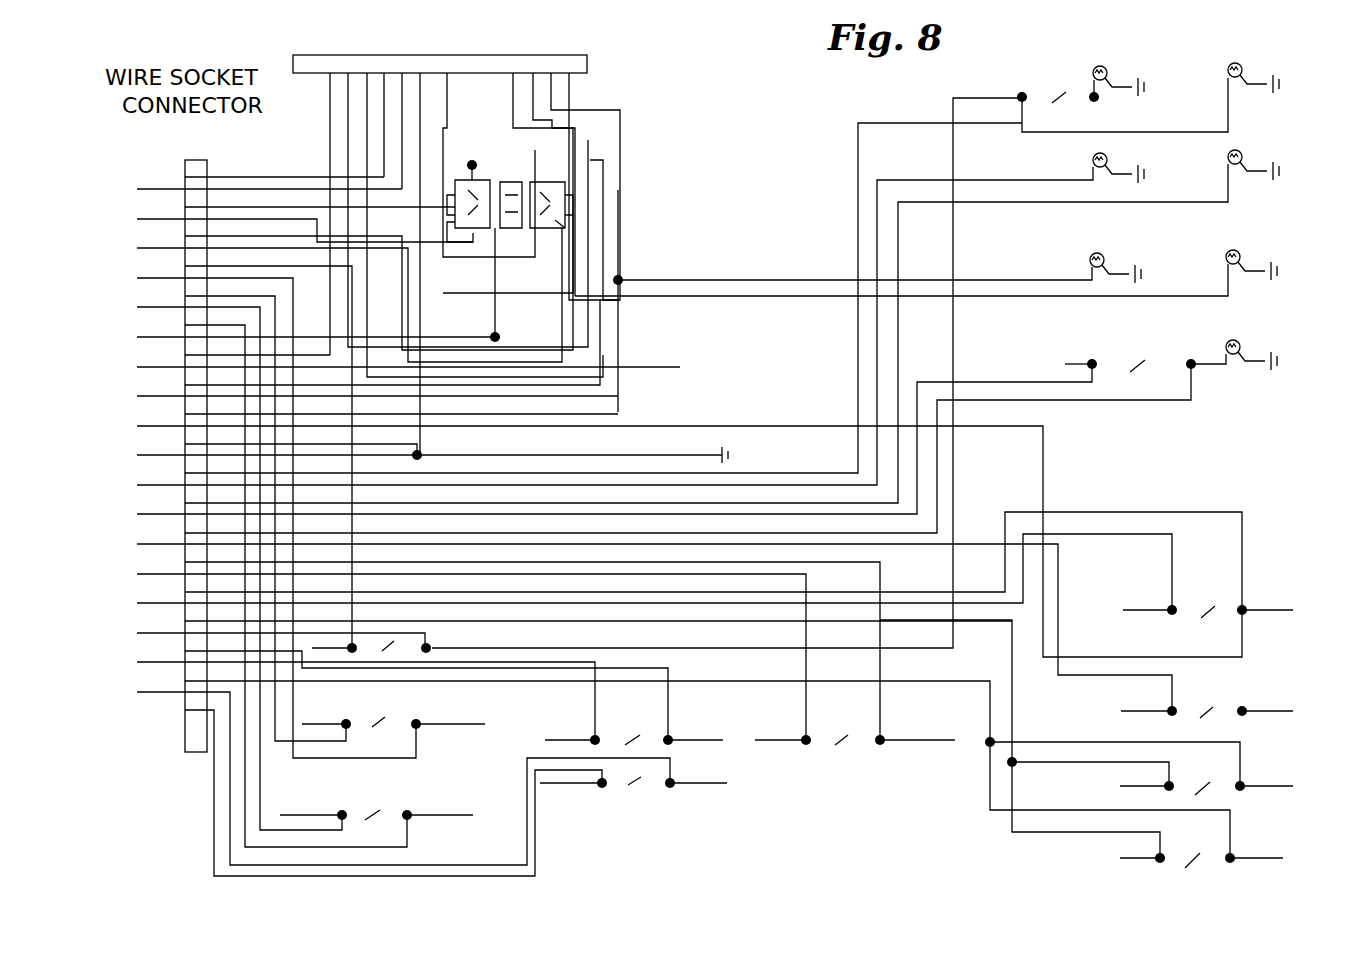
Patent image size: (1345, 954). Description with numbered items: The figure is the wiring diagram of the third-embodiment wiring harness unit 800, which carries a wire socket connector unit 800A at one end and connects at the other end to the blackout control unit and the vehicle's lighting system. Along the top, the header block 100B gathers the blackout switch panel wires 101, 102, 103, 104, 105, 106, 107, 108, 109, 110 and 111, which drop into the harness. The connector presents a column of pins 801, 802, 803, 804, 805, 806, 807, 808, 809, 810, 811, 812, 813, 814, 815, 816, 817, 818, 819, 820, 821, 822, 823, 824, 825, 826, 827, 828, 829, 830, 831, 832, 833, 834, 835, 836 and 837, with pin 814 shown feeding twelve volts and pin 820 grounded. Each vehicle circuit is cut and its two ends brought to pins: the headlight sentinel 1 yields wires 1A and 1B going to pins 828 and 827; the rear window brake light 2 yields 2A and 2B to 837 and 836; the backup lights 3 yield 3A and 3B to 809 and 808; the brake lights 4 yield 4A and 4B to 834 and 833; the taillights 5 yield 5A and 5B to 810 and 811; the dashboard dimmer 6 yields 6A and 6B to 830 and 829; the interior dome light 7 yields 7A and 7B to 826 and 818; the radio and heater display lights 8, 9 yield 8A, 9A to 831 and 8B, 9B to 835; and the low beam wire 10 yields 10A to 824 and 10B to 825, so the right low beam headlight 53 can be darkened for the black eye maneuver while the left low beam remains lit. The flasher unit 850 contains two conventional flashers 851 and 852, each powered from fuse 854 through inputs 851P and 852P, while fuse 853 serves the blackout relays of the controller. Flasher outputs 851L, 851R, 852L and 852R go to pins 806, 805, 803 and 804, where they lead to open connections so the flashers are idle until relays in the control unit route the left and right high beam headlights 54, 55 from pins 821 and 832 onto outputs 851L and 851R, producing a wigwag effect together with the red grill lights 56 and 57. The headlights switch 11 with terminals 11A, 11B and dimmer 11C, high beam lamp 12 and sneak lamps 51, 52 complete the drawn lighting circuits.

The wiring harness unit 800 is at (1245, 464).
The wire socket connector unit 800A is at (185, 175).
The connector header block 100B is at (588, 55).
The blackout switch panel wire 101 is at (320, 184).
The blackout switch panel wire 102 is at (459, 180).
The blackout switch panel wire 103 is at (476, 195).
The blackout switch panel wire 104 is at (379, 95).
The blackout switch panel wire 105 is at (397, 101).
The blackout switch panel wire 106 is at (414, 234).
The blackout switch panel wire 107 is at (484, 135).
The blackout switch panel wire 108 is at (508, 153).
The blackout switch panel wire 109 is at (543, 155).
The blackout switch panel wire 110 is at (574, 213).
The blackout switch panel wire 111 is at (584, 157).
The socket wire 801 is at (263, 176).
The socket wire 802 is at (248, 190).
The pin 803 is at (298, 206).
The pin 804 is at (284, 224).
The pin 805 is at (357, 282).
The pin 806 is at (328, 295).
The socket wire 807 is at (247, 450).
The pin 808 is at (255, 512).
The pin 809 is at (244, 512).
The pin 810 is at (218, 562).
The pin 811 is at (274, 579).
The socket wire 812 is at (295, 337).
The socket wire 813 is at (236, 354).
The socket wire 12 V 814 is at (417, 367).
The socket wire 815 is at (371, 348).
The socket wire 816 is at (356, 396).
The socket wire 817 is at (380, 413).
The pin 818 is at (668, 535).
The pin 819 is at (279, 443).
The socket wire ground 820 is at (471, 455).
The pin 821 is at (582, 304).
The socket wire 822 is at (594, 332).
The socket wire 823 is at (685, 339).
The pin 824 is at (593, 445).
The pin 825 is at (666, 454).
The pin 826 is at (633, 621).
The pin 827 is at (651, 703).
The pin 828 is at (450, 651).
The pin 829 is at (692, 561).
The pin 830 is at (633, 575).
The pin 831 is at (577, 620).
The pin 832 is at (260, 634).
The pin 833 is at (405, 689).
The pin 834 is at (345, 695).
The pin 835 is at (691, 763).
The pin 836 is at (382, 772).
The pin 837 is at (372, 786).
The flasher unit 850 is at (609, 183).
The flasher 851 is at (560, 197).
The flasher output 851L is at (566, 212).
The flasher power input 851P is at (560, 228).
The flasher output 851R is at (548, 195).
The flasher 852 is at (462, 195).
The flasher output 852L is at (472, 192).
The flasher power input 852P is at (480, 205).
The flasher output 852R is at (455, 222).
The fuse 853 is at (500, 232).
The fuse 854 is at (512, 185).
The headlight sentinel 1 is at (925, 740).
The headlight sentinel wire 1A is at (783, 731).
The headlight sentinel wire 1B is at (915, 731).
The rear window brake light 2 is at (715, 783).
The rear window brake light wire 2A is at (573, 793).
The rear window brake light wire 2B is at (696, 793).
The backup lights 3 is at (485, 724).
The backup light wire 3A is at (326, 714).
The backup light wire 3B is at (448, 714).
The brake lights 4 is at (705, 740).
The brake light wire 4A is at (572, 731).
The brake light wire 4B is at (693, 731).
The taillights 5 is at (473, 815).
The taillight wire 5A is at (313, 805).
The taillight wire 5B is at (437, 805).
The dashboard dimmer 6 is at (1293, 610).
The dashboard dimmer wire 6A is at (1150, 598).
The dashboard dimmer wire 6B is at (1265, 598).
The interior dome light 7 is at (1293, 711).
The dome light wire 7A is at (1149, 699).
The dome light wire 7B is at (1265, 699).
The digital radio display light 8 is at (1293, 786).
The radio display light wire 8A is at (1147, 775).
The radio display light wire 8B is at (1264, 775).
The heater display light 9 is at (1283, 858).
The heater display light wire 9A is at (1142, 847).
The heater display light wire 9B is at (1254, 847).
The low beam headlight wire 10 is at (1078, 362).
The low beam headlight wire 10A is at (1073, 373).
The low beam headlight wire 10B is at (1208, 373).
The headlights switch 11 is at (480, 648).
The switch terminal 11A is at (334, 640).
The switch terminal 11B is at (445, 639).
The high beam dimmer switch 11C is at (1122, 105).
The high beam lamp 12 is at (1189, 115).
The sneak lamp 51 is at (1090, 257).
The sneak lamp 52 is at (1227, 252).
The right low beam headlight 53 is at (1227, 342).
The left high beam headlight 54 is at (1093, 70).
The right high beam headlight 55 is at (1229, 65).
The left red grill light 56 is at (1093, 157).
The right red grill light 57 is at (1229, 152).